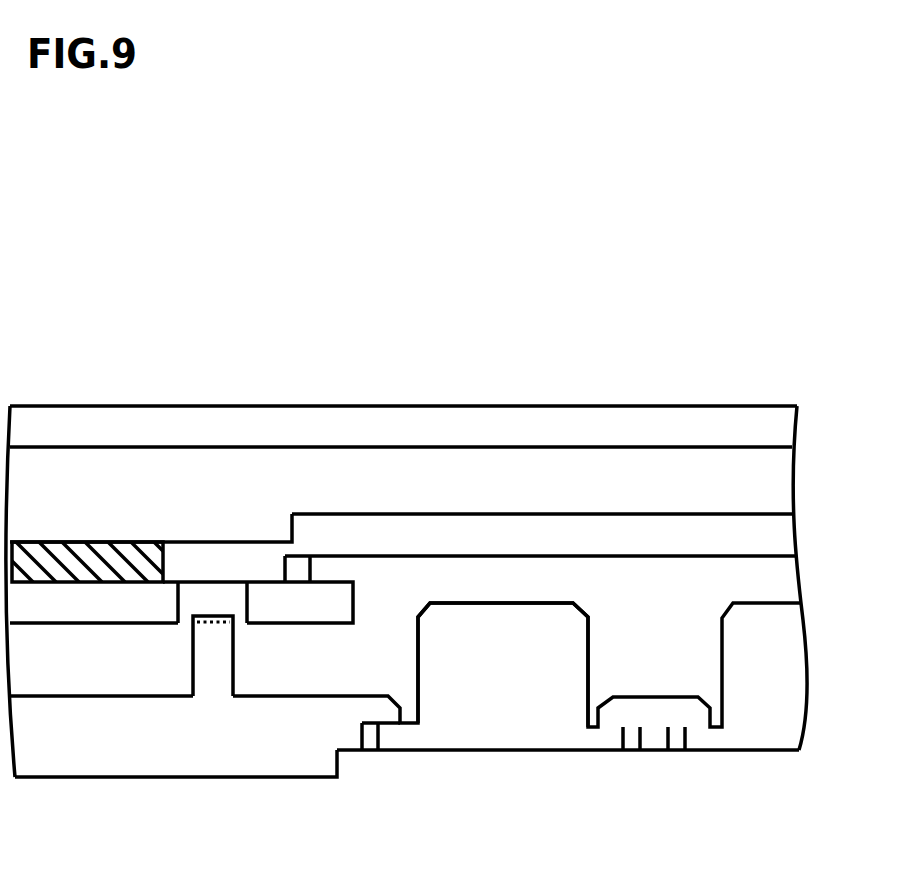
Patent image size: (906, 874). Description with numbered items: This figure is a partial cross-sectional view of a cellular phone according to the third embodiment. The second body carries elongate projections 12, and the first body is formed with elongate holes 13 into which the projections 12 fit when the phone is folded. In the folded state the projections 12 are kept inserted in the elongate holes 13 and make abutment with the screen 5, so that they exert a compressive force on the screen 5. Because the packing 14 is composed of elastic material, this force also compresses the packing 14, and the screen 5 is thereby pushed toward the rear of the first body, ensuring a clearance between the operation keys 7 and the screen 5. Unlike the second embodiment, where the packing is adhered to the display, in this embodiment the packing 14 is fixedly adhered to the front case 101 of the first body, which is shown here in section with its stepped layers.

The screen 5 is at (425, 485).
The operation keys 7 is at (507, 603).
The elongate projections 12 is at (207, 652).
The elongate holes 13 is at (218, 598).
The packing 14 is at (78, 540).
The front case 101 is at (303, 589).